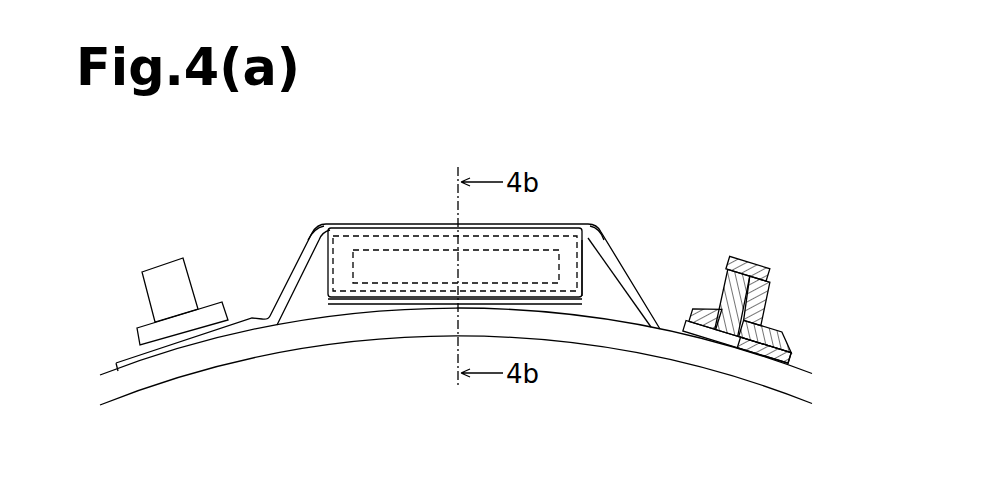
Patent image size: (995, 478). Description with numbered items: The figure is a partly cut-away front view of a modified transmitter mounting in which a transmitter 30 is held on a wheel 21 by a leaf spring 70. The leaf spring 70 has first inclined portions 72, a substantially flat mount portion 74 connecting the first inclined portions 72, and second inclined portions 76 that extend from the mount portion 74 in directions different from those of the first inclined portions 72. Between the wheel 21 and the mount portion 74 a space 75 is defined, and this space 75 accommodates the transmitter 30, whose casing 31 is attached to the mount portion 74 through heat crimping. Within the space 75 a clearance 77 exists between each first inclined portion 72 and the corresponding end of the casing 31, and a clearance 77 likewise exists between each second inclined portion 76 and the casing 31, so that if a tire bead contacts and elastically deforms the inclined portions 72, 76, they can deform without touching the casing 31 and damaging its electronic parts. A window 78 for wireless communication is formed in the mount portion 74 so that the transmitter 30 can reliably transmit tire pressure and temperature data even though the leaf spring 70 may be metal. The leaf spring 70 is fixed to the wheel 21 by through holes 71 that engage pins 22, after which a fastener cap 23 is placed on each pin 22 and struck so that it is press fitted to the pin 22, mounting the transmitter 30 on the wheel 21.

The wheel 21 is at (787, 378).
The pin 22 is at (770, 282).
The fastener cap 23 is at (757, 260).
The transmitter 30 is at (378, 224).
The casing 31 is at (342, 224).
The leaf spring 70 is at (471, 279).
The through hole 71 is at (772, 330).
The first inclined portion 72 is at (290, 277).
The mount portion 74 is at (547, 224).
The space 75 is at (617, 309).
The second inclined portion 76 is at (383, 300).
The clearance 77 is at (316, 233).
The window 78 is at (422, 228).